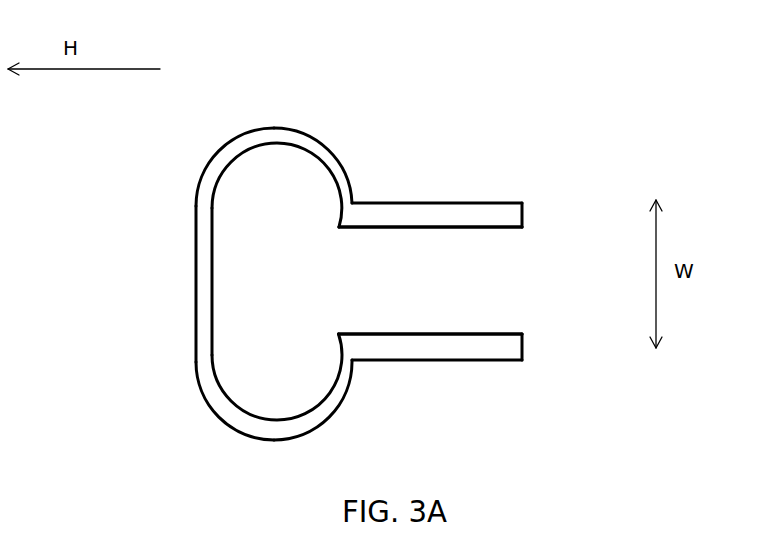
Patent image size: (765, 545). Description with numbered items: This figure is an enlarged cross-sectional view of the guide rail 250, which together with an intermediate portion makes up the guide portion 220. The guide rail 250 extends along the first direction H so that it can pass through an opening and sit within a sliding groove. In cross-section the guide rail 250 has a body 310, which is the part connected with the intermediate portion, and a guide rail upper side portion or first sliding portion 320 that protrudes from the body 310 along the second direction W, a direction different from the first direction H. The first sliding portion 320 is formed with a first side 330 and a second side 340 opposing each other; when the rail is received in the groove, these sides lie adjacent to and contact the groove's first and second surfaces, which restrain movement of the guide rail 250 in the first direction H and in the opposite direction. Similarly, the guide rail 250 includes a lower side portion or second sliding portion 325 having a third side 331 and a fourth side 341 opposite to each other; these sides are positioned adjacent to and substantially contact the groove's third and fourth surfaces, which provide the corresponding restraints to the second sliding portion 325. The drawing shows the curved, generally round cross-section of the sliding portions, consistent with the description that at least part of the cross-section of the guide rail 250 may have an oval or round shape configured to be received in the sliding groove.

The guide portion 220 is at (524, 180).
The guide rail 250 is at (170, 292).
The body 310 is at (409, 203).
The first sliding portion 320 is at (258, 179).
The second sliding portion 325 is at (290, 357).
The first side 330 is at (209, 168).
The third side 331 is at (225, 425).
The second side 340 is at (322, 142).
The fourth side 341 is at (320, 426).